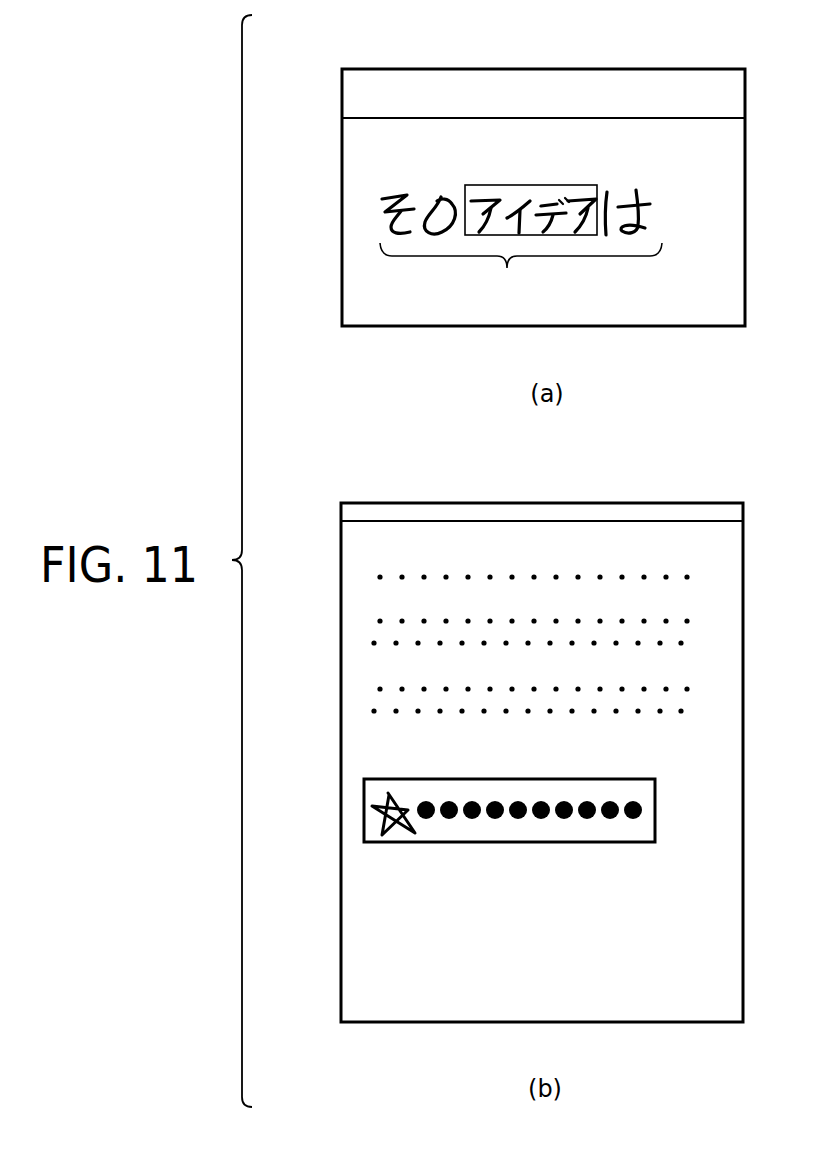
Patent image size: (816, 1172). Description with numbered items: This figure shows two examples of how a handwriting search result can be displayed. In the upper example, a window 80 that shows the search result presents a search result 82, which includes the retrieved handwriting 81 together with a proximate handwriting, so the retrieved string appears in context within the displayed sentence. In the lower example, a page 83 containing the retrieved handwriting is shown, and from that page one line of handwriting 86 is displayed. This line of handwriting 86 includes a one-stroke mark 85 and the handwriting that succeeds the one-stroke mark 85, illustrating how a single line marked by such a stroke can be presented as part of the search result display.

The window 80 is at (392, 68).
The retrieved handwriting 81 is at (557, 184).
The search result 82 is at (521, 246).
The page 83 is at (341, 720).
The one-stroke mark 85 is at (372, 810).
The line of handwriting 86 is at (488, 843).